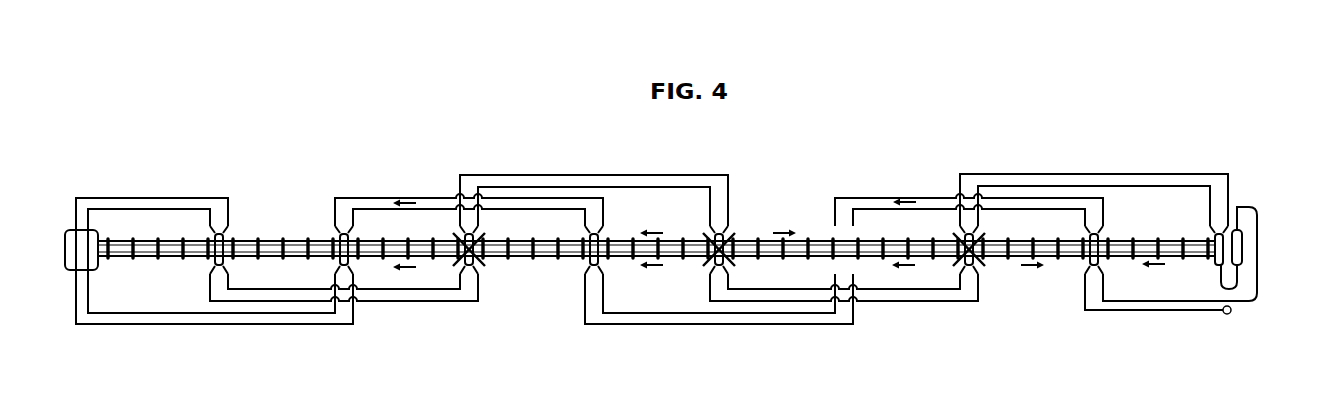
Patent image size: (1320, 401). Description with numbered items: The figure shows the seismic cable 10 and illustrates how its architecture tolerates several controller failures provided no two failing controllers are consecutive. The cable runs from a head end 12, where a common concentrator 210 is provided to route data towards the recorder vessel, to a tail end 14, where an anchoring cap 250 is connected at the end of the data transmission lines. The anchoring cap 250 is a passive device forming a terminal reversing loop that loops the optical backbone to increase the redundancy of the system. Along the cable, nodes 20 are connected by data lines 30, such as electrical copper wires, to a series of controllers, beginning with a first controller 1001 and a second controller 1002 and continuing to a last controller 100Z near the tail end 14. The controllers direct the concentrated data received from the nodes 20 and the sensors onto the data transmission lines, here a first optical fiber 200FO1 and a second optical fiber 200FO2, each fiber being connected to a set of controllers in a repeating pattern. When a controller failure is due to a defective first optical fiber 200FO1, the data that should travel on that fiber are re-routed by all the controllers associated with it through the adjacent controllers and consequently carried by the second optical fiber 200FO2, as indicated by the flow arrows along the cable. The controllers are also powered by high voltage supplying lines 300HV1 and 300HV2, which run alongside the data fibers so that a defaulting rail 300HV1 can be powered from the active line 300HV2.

The seismic cable 10 is at (491, 145).
The head end 12 is at (96, 190).
The tail end 14 is at (1208, 165).
The nodes 20 is at (108, 259).
The data lines 30 is at (170, 259).
The common concentrator 210 is at (72, 248).
The anchoring cap 250 is at (1242, 248).
The first controller 1001 is at (230, 228).
The second controller 1002 is at (336, 231).
The last controller 100Z is at (1212, 235).
The first optical fiber 200FO1 is at (957, 350).
The second optical fiber 200FO2 is at (905, 145).
The high voltage supplying line 300HV1 is at (892, 303).
The second high voltage supplying line 300HV2 is at (145, 326).